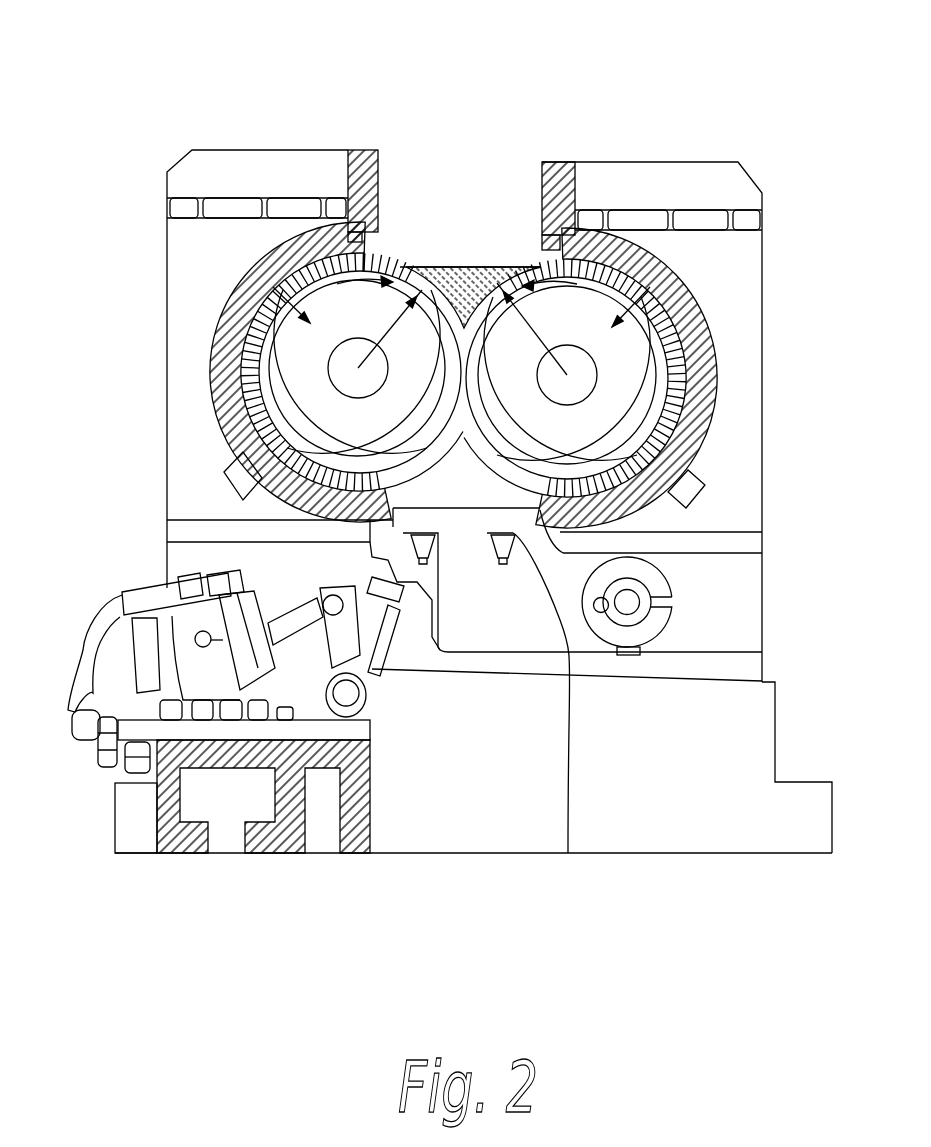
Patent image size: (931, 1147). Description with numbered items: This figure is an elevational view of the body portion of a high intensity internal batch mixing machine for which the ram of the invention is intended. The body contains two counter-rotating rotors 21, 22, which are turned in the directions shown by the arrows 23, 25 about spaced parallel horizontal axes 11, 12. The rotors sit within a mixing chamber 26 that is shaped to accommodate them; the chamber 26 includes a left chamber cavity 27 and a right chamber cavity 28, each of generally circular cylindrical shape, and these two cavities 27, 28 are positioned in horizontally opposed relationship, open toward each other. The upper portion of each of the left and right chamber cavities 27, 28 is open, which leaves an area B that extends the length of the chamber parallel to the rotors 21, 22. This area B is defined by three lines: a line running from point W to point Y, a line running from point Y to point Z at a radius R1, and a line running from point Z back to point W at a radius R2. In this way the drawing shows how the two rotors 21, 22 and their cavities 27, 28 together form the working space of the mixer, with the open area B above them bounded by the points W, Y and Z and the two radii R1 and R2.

The horizontal axis 11 is at (290, 400).
The horizontal axis 12 is at (567, 372).
The rotor 21 is at (273, 287).
The rotor 22 is at (650, 287).
The arrow 23 is at (355, 268).
The arrow 25 is at (577, 284).
The mixing chamber 26 is at (262, 368).
The left chamber cavity 27 is at (240, 487).
The right chamber cavity 28 is at (685, 470).
The point w W is at (404, 272).
The area B is at (473, 267).
The point y Y is at (540, 267).
The point z Z is at (647, 410).
The radius R1 is at (497, 283).
The radius R2 is at (422, 290).